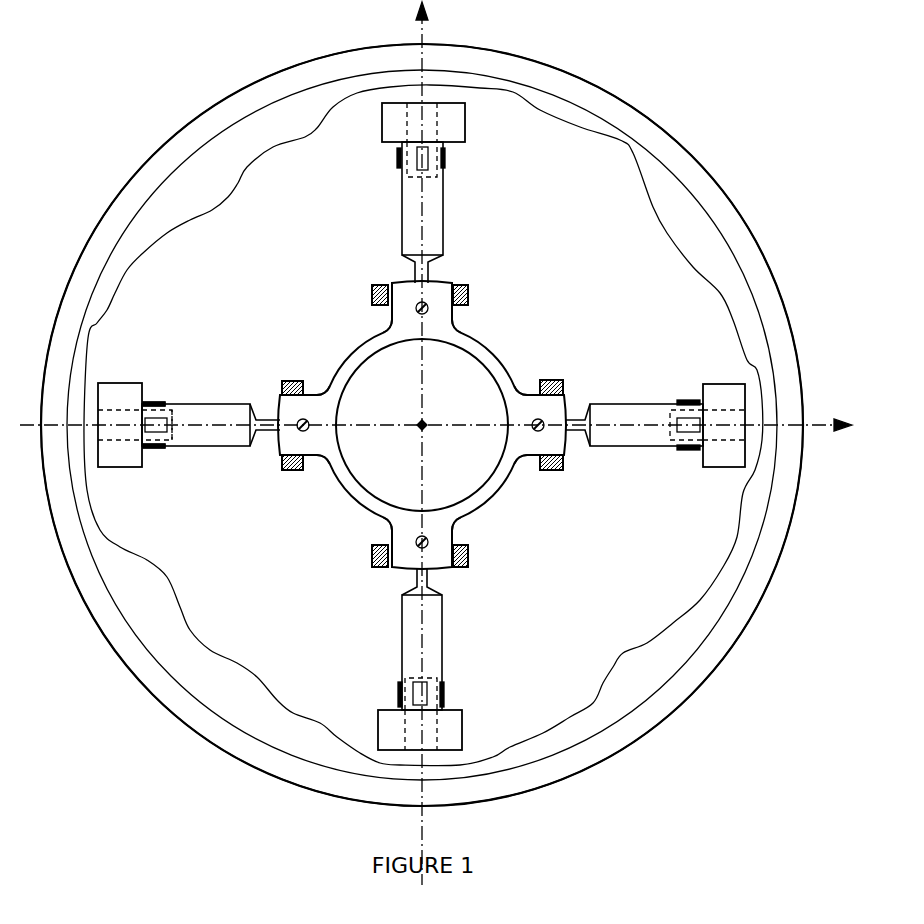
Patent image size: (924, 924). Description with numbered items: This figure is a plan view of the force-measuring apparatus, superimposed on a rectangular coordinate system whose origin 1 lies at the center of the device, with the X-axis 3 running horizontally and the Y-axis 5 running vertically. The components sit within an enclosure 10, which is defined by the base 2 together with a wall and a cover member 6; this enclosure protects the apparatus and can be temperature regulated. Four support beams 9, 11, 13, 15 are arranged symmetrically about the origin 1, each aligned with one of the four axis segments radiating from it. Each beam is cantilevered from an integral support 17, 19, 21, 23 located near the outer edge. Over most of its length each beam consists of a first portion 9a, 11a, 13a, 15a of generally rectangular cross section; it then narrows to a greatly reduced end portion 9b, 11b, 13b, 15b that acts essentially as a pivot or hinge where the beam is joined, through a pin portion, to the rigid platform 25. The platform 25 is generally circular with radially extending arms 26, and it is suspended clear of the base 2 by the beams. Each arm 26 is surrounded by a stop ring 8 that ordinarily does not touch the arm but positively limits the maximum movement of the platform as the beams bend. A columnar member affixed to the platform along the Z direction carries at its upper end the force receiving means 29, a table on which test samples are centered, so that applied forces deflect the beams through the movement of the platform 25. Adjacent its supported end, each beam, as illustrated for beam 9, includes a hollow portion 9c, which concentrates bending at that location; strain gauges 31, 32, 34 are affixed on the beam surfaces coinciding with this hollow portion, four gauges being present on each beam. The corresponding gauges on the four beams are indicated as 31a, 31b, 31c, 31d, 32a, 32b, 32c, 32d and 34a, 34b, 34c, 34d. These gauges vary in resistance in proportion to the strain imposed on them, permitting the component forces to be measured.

The origin 1 is at (424, 427).
The base 2 is at (155, 163).
The X-axis 3 is at (806, 412).
The Y-axis 5 is at (432, 10).
The cover member 6 is at (232, 143).
The stop ring 8 is at (372, 295).
The support beam 9 is at (211, 435).
The first portion 9a is at (230, 440).
The second portion 9b is at (266, 432).
The hollow portion 9c is at (177, 410).
The enclosure 10 is at (646, 118).
The support beam 11 is at (428, 212).
The first portion 11a is at (440, 240).
The end portion 11b is at (428, 275).
The support beam 13 is at (634, 432).
The first portion 13a is at (640, 415).
The end portion 13b is at (575, 420).
The support beam 15 is at (426, 639).
The first portion 15a is at (445, 645).
The end portion 15b is at (415, 580).
The integral support 17 is at (130, 468).
The integral support 19 is at (465, 128).
The integral support 21 is at (728, 468).
The integral support 23 is at (462, 730).
The rigid platform 25 is at (452, 332).
The radially extending arm 26 is at (393, 318).
The force receiving means 29 is at (470, 372).
The strain gauge 31 is at (150, 418).
The sensor socket 31a is at (155, 427).
The sensor element 31b is at (680, 428).
The sensor element 31c is at (410, 680).
The sensor socket 31d is at (453, 178).
The strain gauge 32 is at (150, 448).
The contact strip 32a is at (165, 450).
The contact strip 32b is at (690, 400).
The contact strip 32c is at (445, 690).
The contact strip 32d is at (397, 163).
The strain gauge 34 is at (150, 404).
The contact strip 34a is at (156, 404).
The contact strip 34b is at (695, 450).
The contact strip 34c is at (400, 695).
The contact strip 34d is at (447, 160).